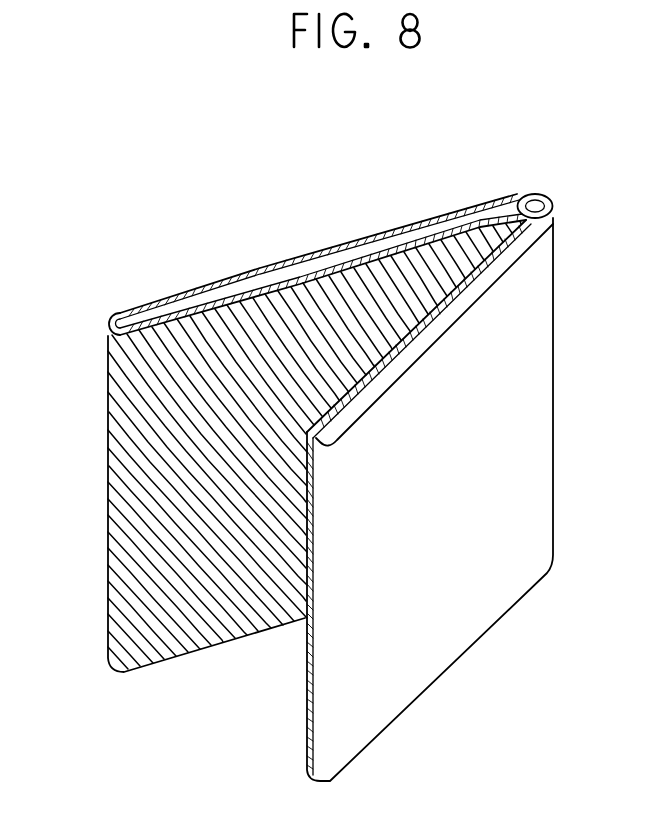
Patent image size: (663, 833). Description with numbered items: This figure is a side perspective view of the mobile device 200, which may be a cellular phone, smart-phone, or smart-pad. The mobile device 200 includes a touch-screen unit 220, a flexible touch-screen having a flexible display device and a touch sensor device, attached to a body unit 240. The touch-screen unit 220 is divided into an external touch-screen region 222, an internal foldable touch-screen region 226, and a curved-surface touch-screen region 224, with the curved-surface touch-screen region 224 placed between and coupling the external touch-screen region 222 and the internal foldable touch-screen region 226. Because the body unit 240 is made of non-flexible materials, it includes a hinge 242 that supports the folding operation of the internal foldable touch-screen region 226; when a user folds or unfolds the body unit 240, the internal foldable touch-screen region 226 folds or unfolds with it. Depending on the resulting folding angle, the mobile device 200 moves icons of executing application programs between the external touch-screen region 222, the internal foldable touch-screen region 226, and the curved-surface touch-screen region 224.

The mobile device 200 is at (355, 135).
The touch-screen unit 220 is at (307, 718).
The external touch-screen region 222 is at (276, 254).
The curved-surface touch-screen region 224 is at (116, 649).
The internal foldable touch-screen region 226 is at (317, 308).
The body unit 240 is at (533, 244).
The hinge 242 is at (555, 197).